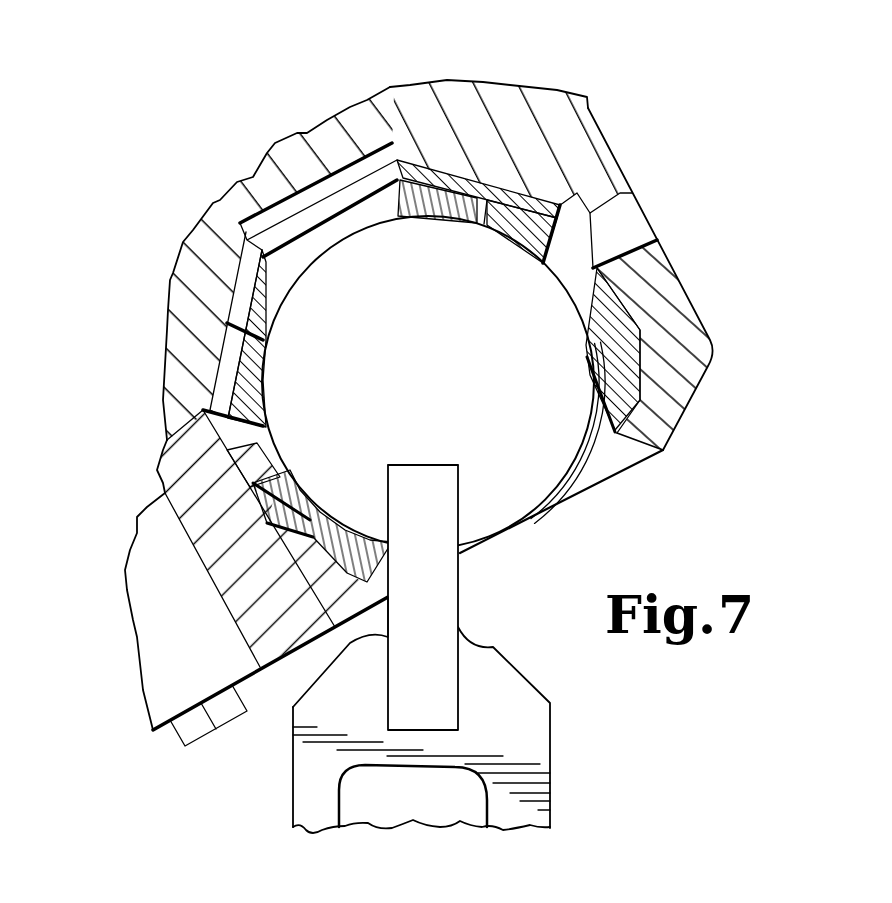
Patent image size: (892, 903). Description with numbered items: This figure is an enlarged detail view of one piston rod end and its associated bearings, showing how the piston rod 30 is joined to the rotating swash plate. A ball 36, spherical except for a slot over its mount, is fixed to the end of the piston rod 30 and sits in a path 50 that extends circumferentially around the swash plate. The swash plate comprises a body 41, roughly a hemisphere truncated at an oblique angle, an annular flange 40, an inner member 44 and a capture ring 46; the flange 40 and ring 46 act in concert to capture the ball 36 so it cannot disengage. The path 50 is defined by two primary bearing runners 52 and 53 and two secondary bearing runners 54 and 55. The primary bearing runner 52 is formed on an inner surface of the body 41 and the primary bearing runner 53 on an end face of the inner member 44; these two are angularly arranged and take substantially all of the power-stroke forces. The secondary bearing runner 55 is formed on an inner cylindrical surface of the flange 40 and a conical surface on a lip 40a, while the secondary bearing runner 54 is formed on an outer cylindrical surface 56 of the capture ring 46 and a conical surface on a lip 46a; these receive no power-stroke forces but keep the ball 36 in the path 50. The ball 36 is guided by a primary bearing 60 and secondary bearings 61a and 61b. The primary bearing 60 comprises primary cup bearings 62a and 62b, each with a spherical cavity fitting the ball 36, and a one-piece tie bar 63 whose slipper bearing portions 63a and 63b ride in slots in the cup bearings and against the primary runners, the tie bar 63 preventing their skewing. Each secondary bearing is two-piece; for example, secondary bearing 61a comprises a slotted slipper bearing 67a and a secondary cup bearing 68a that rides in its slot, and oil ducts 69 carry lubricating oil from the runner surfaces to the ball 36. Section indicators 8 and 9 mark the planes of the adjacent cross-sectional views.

The section line 8- 8 is at (718, 347).
The section line 9- 9 is at (493, 21).
The piston rod 30 is at (556, 765).
The ball 36 is at (532, 512).
The annular flange 40 is at (690, 290).
The lip 40a is at (640, 452).
The body 41 is at (445, 83).
The inner member 44 is at (170, 264).
The capture ring 46 is at (242, 626).
The lip 46a is at (327, 633).
The path 50 is at (368, 160).
The primary bearing runner 52 is at (512, 222).
The primary bearing runner 53 is at (265, 303).
The secondary bearing runner 54 is at (362, 566).
The secondary bearing runner 55 is at (588, 382).
The outer cylindrical surface 56 is at (259, 443).
The primary bearing 60 is at (335, 230).
The secondary bearing 61a is at (300, 474).
The secondary bearing 61b is at (578, 332).
The primary cup bearing 62a is at (264, 345).
The primary cup bearing 62b is at (450, 217).
The tie bar 63 is at (292, 197).
The slipper bearing portion 63a is at (213, 328).
The slipper bearing portion 63b is at (545, 188).
The slotted slipper bearing 67a is at (352, 625).
The secondary cup bearing 68a is at (350, 528).
The oil ducts 69 is at (267, 515).